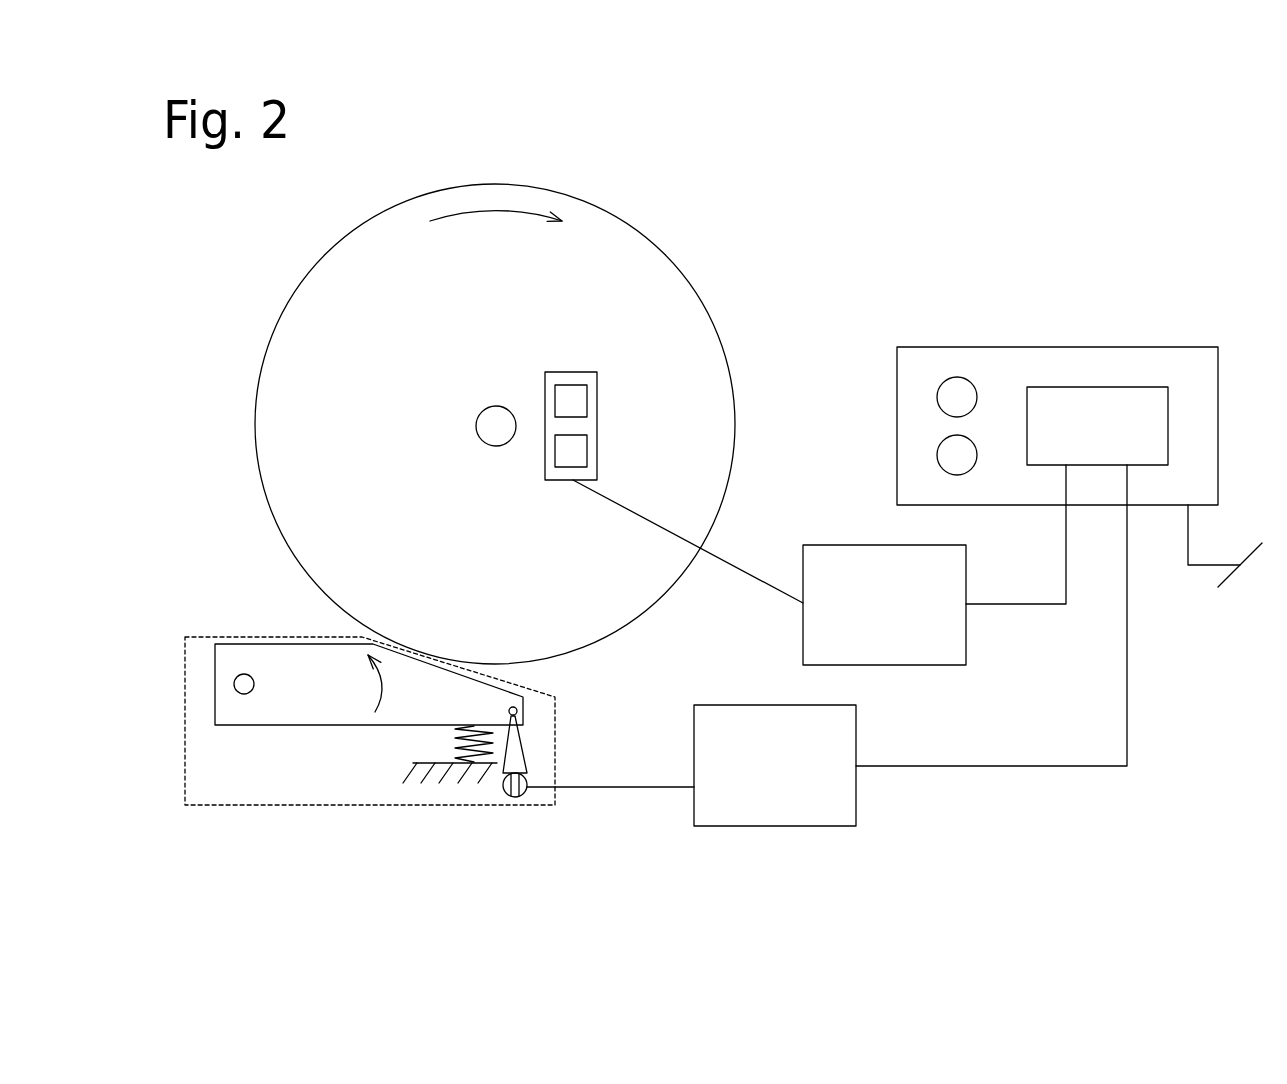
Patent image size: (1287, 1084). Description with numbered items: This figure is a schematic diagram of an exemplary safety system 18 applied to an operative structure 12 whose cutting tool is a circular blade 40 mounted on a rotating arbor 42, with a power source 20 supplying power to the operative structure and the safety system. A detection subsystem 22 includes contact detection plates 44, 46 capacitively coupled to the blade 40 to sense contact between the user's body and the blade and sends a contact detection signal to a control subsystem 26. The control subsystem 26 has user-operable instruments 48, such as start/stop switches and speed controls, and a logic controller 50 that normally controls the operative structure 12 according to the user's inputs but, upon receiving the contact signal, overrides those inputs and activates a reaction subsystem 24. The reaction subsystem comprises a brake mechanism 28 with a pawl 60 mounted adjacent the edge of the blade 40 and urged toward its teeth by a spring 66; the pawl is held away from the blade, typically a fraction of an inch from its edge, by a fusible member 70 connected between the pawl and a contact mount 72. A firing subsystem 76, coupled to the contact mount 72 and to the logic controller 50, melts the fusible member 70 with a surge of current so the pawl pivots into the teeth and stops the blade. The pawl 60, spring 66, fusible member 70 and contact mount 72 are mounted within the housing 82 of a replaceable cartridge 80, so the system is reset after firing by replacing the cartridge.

The operative structure 12 is at (727, 196).
The safety system 18 is at (1046, 235).
The power source 20 is at (1228, 562).
The detection subsystem 22 is at (944, 596).
The reaction subsystem 24 is at (818, 872).
The control subsystem 26 is at (1097, 345).
The brake mechanism 28 is at (260, 756).
The circular blade 40 is at (406, 303).
The arbor 42 is at (485, 432).
The contact detection plate 44 is at (580, 395).
The contact detection plate 46 is at (580, 445).
The instruments 48 is at (945, 397).
The logic controller 50 is at (1144, 436).
The pawl 60 is at (269, 657).
The spring 66 is at (425, 746).
The fusible member 70 is at (525, 762).
The contact mount 72 is at (510, 796).
The firing subsystem 76 is at (831, 751).
The replaceable cartridge 80 is at (216, 848).
The housing 82 is at (283, 806).